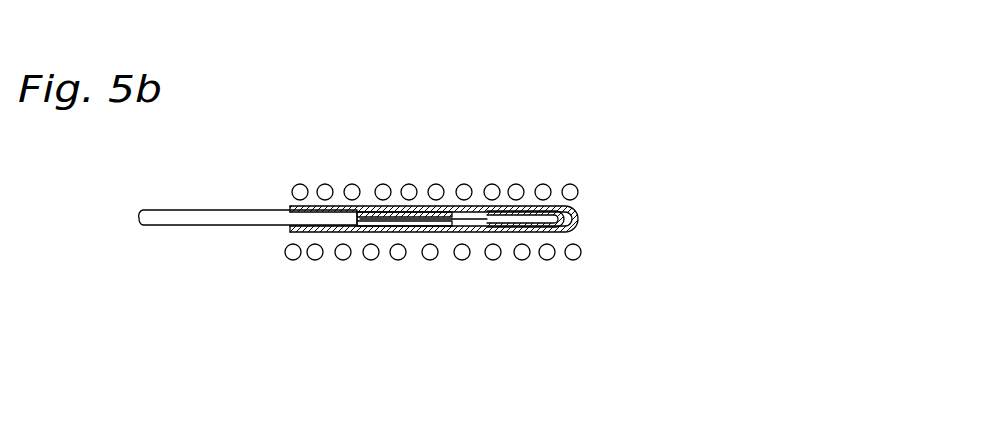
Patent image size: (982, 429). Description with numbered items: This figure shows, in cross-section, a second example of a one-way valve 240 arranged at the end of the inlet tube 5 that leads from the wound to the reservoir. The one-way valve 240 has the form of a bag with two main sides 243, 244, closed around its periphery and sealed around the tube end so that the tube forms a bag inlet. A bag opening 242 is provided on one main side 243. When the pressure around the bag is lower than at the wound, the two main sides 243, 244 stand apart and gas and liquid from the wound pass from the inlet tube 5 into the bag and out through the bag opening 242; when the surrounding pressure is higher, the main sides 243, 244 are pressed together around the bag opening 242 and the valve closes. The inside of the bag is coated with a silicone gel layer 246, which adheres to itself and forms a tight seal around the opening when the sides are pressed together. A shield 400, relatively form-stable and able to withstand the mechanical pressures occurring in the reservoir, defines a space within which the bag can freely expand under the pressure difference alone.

The inlet tube 5 is at (186, 226).
The one-way valve 240 is at (468, 195).
The bag opening 242 is at (458, 206).
The main side 243 is at (360, 210).
The main side 244 is at (337, 232).
The silicone gel layer 246 is at (468, 215).
The shield 400 is at (461, 261).